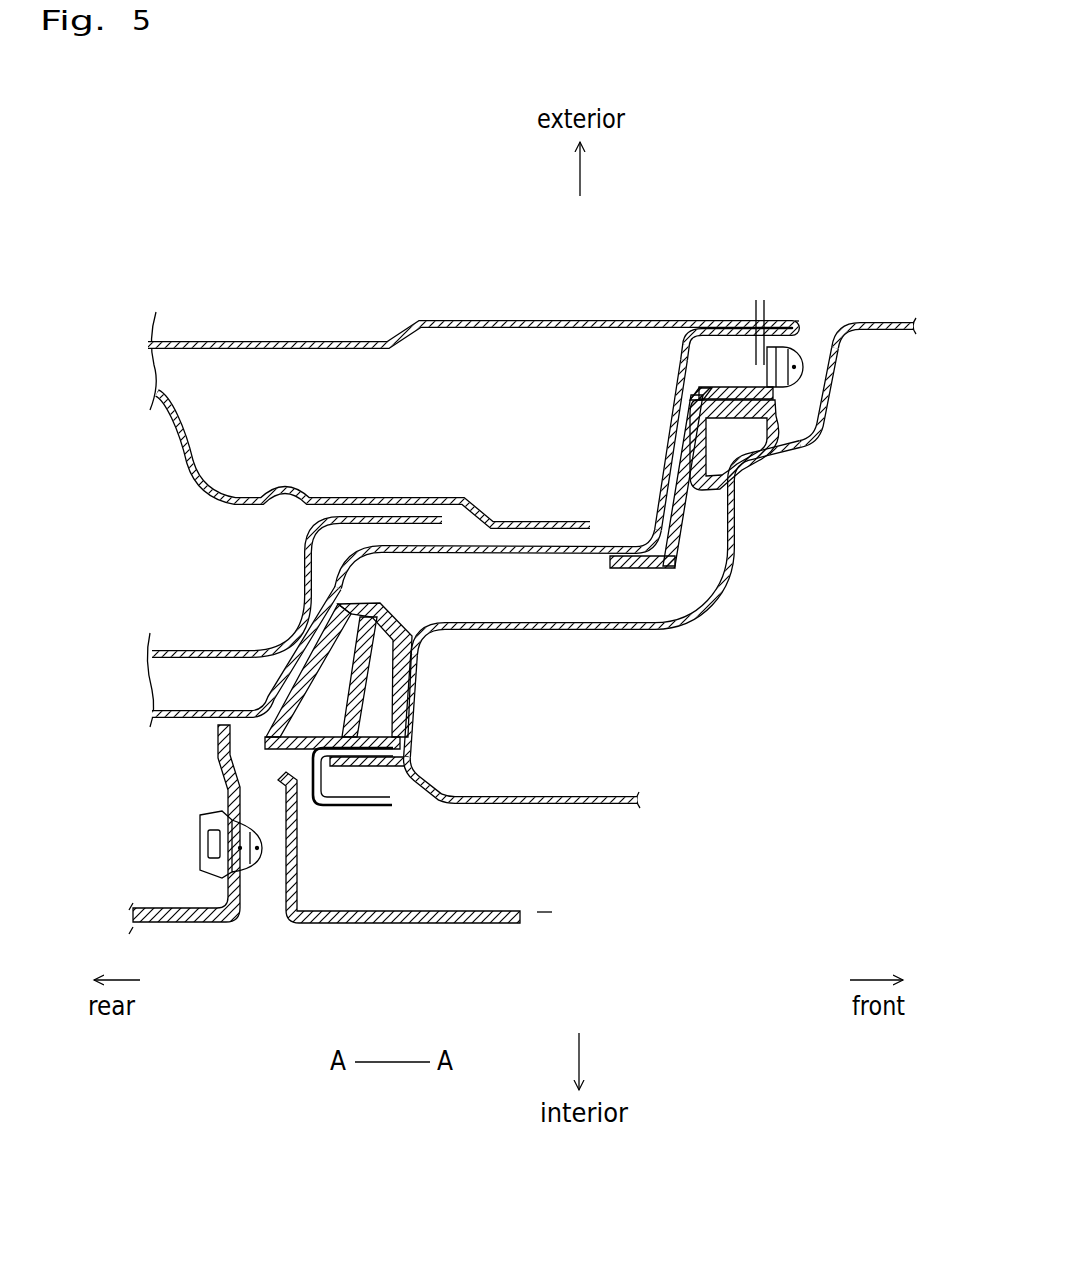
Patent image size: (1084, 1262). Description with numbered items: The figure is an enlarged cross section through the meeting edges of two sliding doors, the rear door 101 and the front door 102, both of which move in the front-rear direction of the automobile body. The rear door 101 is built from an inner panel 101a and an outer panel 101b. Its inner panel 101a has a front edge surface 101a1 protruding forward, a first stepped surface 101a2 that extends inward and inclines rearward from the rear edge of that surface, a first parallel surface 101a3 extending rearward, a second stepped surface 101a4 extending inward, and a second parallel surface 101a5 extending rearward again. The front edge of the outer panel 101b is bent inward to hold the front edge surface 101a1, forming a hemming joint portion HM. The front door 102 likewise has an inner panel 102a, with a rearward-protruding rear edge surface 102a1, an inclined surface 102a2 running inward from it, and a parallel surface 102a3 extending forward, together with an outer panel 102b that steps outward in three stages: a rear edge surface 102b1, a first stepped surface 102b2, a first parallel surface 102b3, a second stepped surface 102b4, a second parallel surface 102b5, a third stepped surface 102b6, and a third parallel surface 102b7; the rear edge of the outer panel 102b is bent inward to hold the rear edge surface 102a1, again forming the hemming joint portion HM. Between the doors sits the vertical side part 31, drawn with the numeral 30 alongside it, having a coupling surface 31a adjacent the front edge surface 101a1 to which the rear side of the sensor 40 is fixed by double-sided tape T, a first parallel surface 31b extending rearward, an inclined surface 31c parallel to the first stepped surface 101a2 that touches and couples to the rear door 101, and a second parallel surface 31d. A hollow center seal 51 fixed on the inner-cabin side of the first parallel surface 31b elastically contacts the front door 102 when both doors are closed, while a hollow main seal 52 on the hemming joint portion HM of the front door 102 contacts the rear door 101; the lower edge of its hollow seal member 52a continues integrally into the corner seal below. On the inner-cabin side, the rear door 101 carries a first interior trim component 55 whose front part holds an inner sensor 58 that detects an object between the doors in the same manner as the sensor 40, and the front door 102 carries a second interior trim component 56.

The rear door 101 is at (330, 306).
The outer panel 101b is at (485, 303).
The inner panel 101a is at (618, 528).
The front edge surface 101a1 is at (682, 338).
The first stepped surface 101a2 is at (672, 420).
The first parallel surface 101a3 is at (450, 554).
The second stepped surface 101a4 is at (304, 590).
The second parallel surface 101a5 is at (153, 710).
The front door 102 is at (894, 315).
The inner panel 102a is at (574, 810).
The rear edge surface 102a1 is at (372, 803).
The inclined surface 102a2 is at (404, 786).
The parallel surface 102a3 is at (604, 796).
The outer panel 102b is at (708, 609).
The rear edge surface 102b1 is at (266, 744).
The first stepped surface 102b2 is at (416, 715).
The first parallel surface 102b3 is at (548, 631).
The second stepped surface 102b4 is at (736, 583).
The second parallel surface 102b5 is at (797, 466).
The third stepped surface 102b6 is at (832, 405).
The third parallel surface 102b7 is at (872, 332).
The clip assembly 30 is at (683, 480).
The vertical side part 31 is at (684, 520).
The coupling surface 31a is at (764, 338).
The first parallel surface 31b is at (697, 392).
The inclined surface 31c is at (685, 468).
The second parallel surface 31d is at (636, 570).
The sensor 40 is at (807, 361).
The center seal 51 is at (781, 431).
The main seal 52 is at (266, 757).
The hollow seal member 52a is at (262, 712).
The first interior trim component 55 is at (180, 924).
The second interior trim component 56 is at (450, 925).
The inner sensor 58 is at (248, 878).
The hemming joint portion HM is at (750, 346).
The double-sided tape T is at (797, 334).